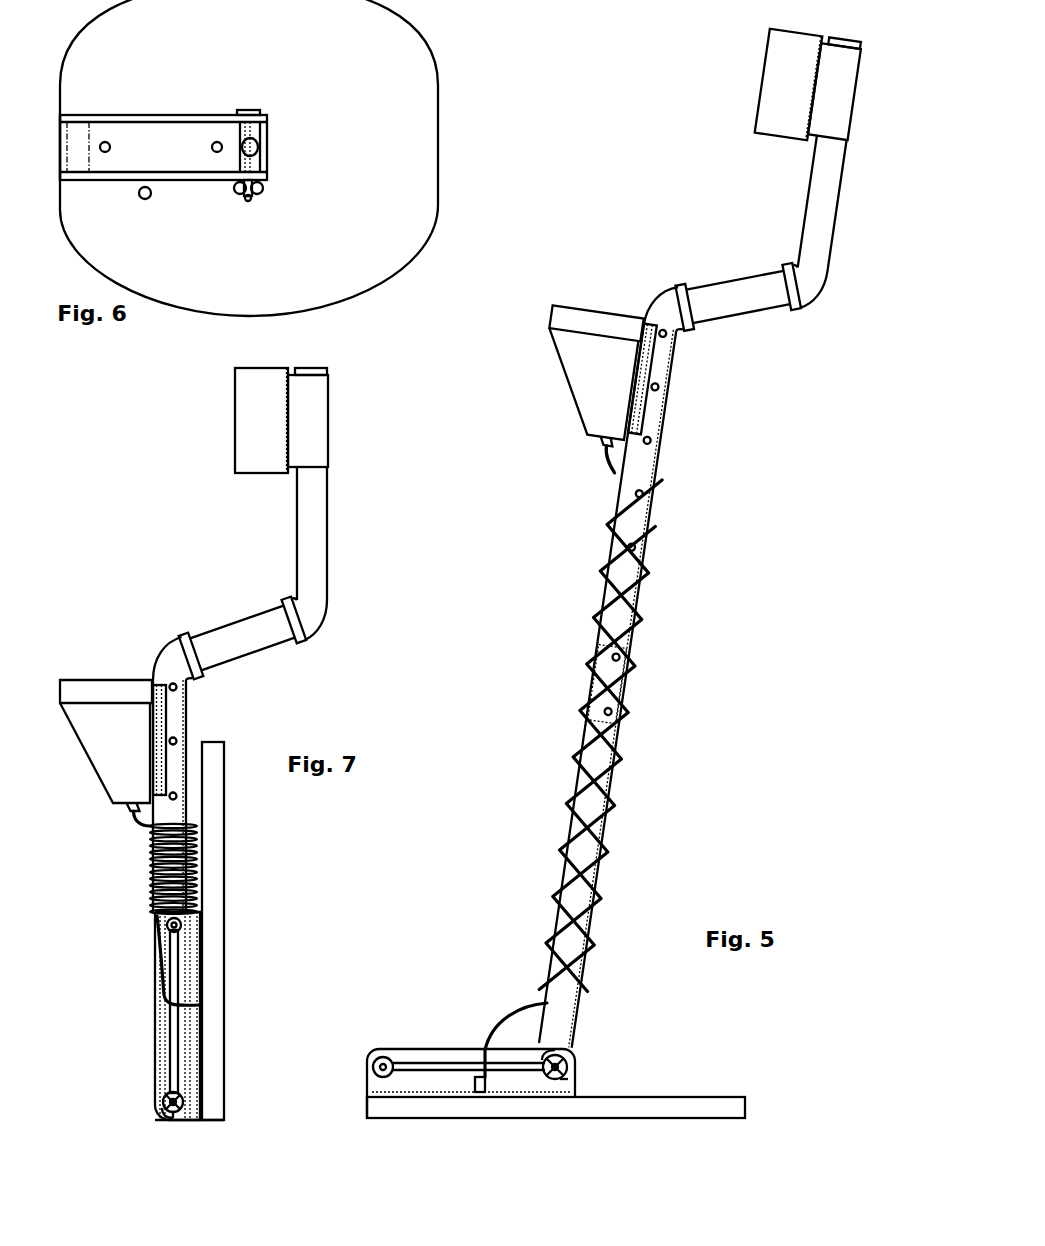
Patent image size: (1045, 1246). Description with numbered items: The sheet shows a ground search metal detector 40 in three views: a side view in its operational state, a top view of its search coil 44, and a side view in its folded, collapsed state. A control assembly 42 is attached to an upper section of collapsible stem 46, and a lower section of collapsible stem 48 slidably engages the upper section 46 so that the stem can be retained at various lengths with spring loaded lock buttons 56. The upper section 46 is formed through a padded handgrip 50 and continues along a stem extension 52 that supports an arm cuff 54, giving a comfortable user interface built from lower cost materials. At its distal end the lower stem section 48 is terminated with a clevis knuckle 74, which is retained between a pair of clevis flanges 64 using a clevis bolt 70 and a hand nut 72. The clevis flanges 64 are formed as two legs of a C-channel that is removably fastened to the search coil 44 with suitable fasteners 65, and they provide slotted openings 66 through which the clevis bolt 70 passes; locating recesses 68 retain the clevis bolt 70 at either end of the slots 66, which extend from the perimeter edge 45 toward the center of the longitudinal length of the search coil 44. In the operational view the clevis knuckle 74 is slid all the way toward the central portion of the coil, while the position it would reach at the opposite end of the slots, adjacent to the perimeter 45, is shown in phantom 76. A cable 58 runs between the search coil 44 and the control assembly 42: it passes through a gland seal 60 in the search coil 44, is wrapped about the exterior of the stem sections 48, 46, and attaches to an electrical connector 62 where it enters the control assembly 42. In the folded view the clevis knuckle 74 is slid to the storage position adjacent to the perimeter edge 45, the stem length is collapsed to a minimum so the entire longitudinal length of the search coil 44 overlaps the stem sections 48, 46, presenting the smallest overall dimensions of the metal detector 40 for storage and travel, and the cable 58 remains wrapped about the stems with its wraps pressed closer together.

In FIG. 7, the ground search metal detector 40 is at (100, 607).
In FIG. 5, the ground search metal detector 40 is at (731, 823).
In FIG. 7, the control assembly 42 is at (91, 762).
In FIG. 5, the control assembly 42 is at (571, 372).
In FIG. 6, the search coil 44 is at (438, 97).
In FIG. 7, the search coil 44 is at (224, 826).
In FIG. 5, the search coil 44 is at (746, 1110).
In FIG. 6, the perimeter edge 45 is at (60, 168).
In FIG. 7, the perimeter edge 45 is at (210, 1121).
In FIG. 5, the perimeter edge 45 is at (367, 1104).
In FIG. 7, the upper section of collapsible stem 46 is at (188, 723).
In FIG. 5, the upper section of collapsible stem 46 is at (665, 490).
In FIG. 6, the lower section of collapsible stem 48 is at (259, 155).
In FIG. 7, the lower section of collapsible stem 48 is at (162, 679).
In FIG. 5, the lower section of collapsible stem 48 is at (596, 873).
In FIG. 7, the padded handgrip 50 is at (236, 618).
In FIG. 5, the padded handgrip 50 is at (741, 268).
In FIG. 7, the stem extension 52 is at (297, 535).
In FIG. 5, the stem extension 52 is at (813, 200).
In FIG. 7, the arm cuff 54 is at (235, 425).
In FIG. 5, the arm cuff 54 is at (765, 88).
In FIG. 5, the spring loaded lock buttons 56 is at (610, 716).
In FIG. 7, the cable 58 is at (150, 868).
In FIG. 5, the cable 58 is at (612, 490).
In FIG. 6, the gland seal 60 is at (145, 199).
In FIG. 7, the gland seal 60 is at (196, 1001).
In FIG. 5, the gland seal 60 is at (490, 1086).
In FIG. 7, the electrical connector 62 is at (130, 810).
In FIG. 5, the electrical connector 62 is at (592, 446).
In FIG. 6, the clevis flanges 64 is at (166, 113).
In FIG. 7, the clevis flanges 64 is at (155, 1008).
In FIG. 5, the clevis flanges 64 is at (460, 1049).
In FIG. 6, the fasteners 65 is at (105, 142).
In FIG. 7, the slotted openings 66 is at (170, 1047).
In FIG. 5, the slotted openings 66 is at (418, 1062).
In FIG. 5, the locating recesses 68 is at (376, 1075).
In FIG. 6, the clevis bolt 70 is at (250, 110).
In FIG. 7, the clevis bolt 70 is at (163, 1100).
In FIG. 5, the clevis bolt 70 is at (568, 1060).
In FIG. 6, the hand nut 72 is at (250, 200).
In FIG. 7, the hand nut 72 is at (176, 1113).
In FIG. 5, the hand nut 72 is at (569, 1073).
In FIG. 6, the clevis knuckle 74 is at (262, 128).
In FIG. 7, the clevis knuckle 74 is at (168, 1114).
In FIG. 5, the clevis knuckle 74 is at (571, 1058).
In FIG. 6, the phantom position of clevis knuckle 76 is at (67, 147).